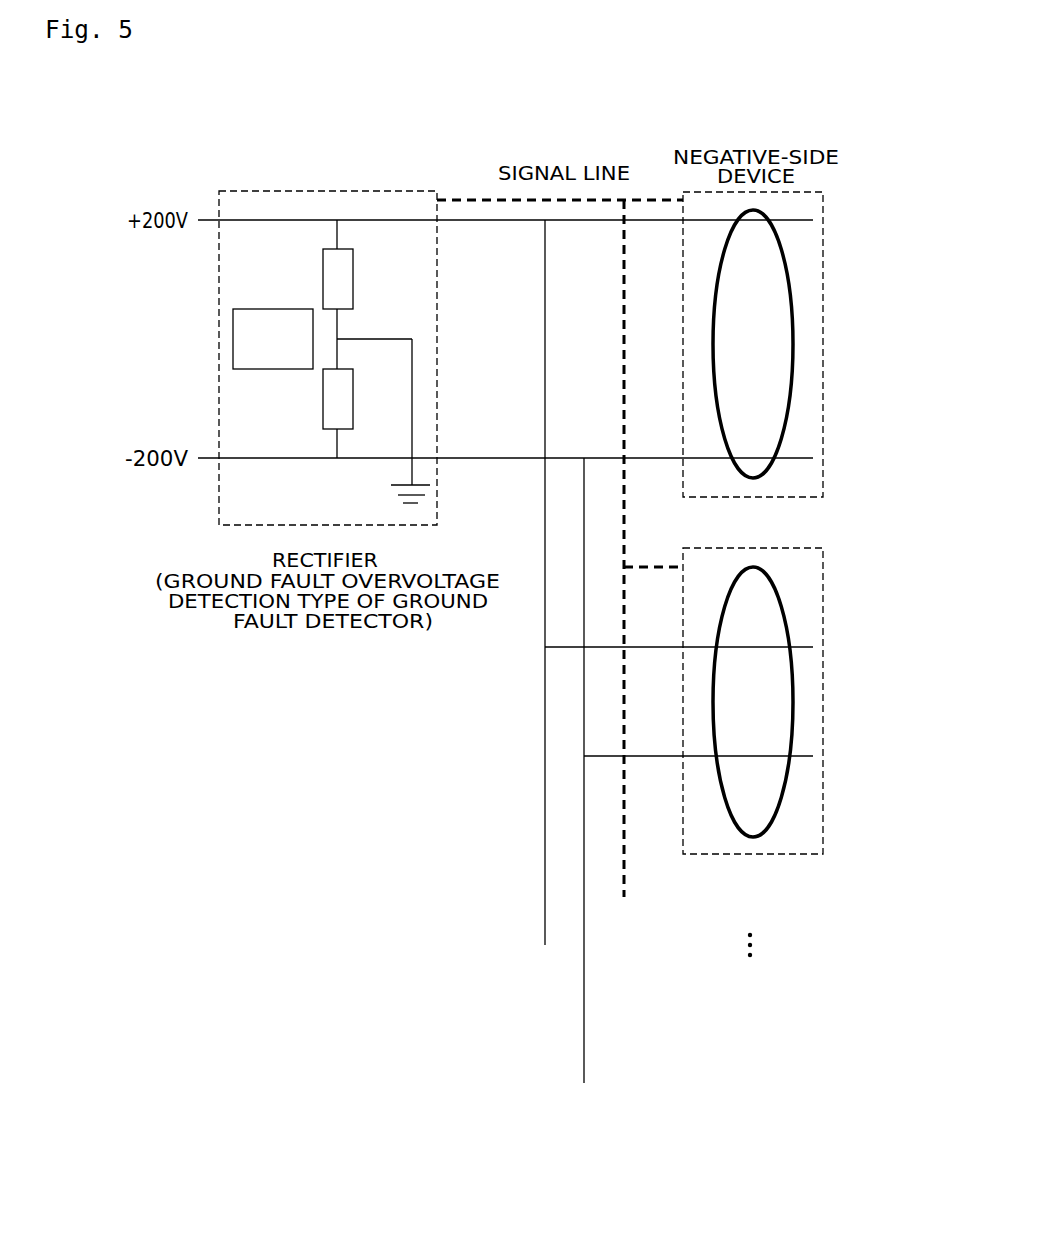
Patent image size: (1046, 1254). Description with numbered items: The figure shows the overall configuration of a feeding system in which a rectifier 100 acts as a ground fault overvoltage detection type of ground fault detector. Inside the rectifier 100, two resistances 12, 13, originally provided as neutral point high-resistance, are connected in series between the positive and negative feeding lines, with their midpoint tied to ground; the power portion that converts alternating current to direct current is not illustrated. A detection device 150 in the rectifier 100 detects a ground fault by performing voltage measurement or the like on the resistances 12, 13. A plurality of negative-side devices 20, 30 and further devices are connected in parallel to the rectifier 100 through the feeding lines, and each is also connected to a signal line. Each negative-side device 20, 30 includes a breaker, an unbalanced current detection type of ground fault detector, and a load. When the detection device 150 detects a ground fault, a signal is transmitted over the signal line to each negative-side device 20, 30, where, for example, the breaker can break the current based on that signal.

The rectifier 100 is at (367, 190).
The detection device 150 is at (270, 309).
The resistance 12 is at (353, 276).
The resistance 13 is at (353, 397).
The negative-side device 20 is at (824, 237).
The negative-side device 30 is at (824, 594).